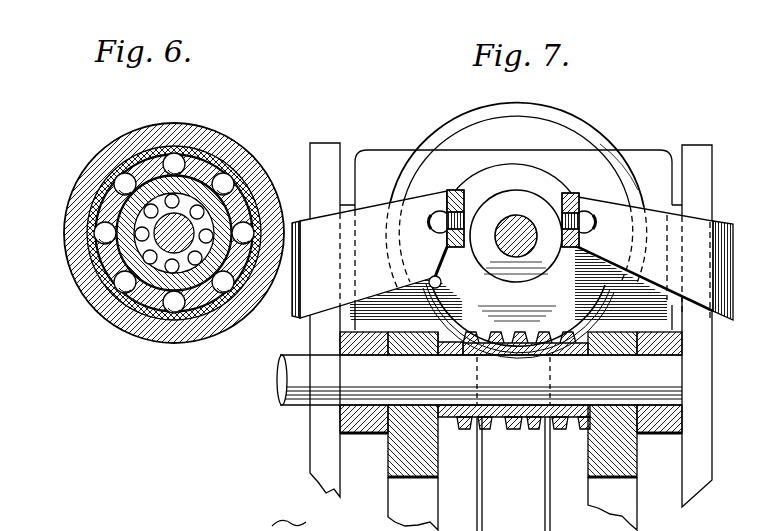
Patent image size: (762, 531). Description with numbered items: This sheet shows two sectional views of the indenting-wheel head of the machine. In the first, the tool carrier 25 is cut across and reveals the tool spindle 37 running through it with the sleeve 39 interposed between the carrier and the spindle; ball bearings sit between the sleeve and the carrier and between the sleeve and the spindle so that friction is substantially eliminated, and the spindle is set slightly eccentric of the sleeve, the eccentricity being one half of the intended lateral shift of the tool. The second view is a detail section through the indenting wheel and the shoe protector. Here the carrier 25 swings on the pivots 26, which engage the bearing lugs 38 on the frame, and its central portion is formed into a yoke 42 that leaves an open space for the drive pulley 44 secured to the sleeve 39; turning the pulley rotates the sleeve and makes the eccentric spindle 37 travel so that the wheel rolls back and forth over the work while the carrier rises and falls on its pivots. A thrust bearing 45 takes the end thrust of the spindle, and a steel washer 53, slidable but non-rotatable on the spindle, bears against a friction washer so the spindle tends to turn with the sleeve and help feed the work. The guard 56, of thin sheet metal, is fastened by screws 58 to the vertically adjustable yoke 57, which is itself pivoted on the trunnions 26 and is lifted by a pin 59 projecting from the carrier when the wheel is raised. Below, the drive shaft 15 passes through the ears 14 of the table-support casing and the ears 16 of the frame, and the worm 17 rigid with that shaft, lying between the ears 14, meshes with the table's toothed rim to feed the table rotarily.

In FIG. 7, the ears 14 is at (365, 434).
In FIG. 7, the drive shaft 15 is at (282, 380).
In FIG. 7, the ears 16 is at (590, 466).
In FIG. 7, the worm 17 is at (521, 430).
In FIG. 6, the tool carrier 25 is at (82, 162).
In FIG. 7, the tool carrier 25 is at (598, 182).
In FIG. 7, the pivots 26 is at (513, 474).
In FIG. 6, the tool spindle 37 is at (208, 168).
In FIG. 7, the tool spindle 37 is at (515, 215).
In FIG. 7, the bearing lugs 38 is at (325, 148).
In FIG. 6, the sleeve 39 is at (108, 275).
In FIG. 7, the yoke 42 is at (511, 240).
In FIG. 7, the drive pulley 44 is at (482, 118).
In FIG. 7, the thrust bearing 45 is at (486, 258).
In FIG. 7, the steel washer 53 is at (508, 261).
In FIG. 7, the guard 56 is at (455, 190).
In FIG. 7, the vertically adjustable yoke 57 is at (512, 255).
In FIG. 7, the screws 58 is at (436, 229).
In FIG. 7, the pin 59 is at (432, 277).